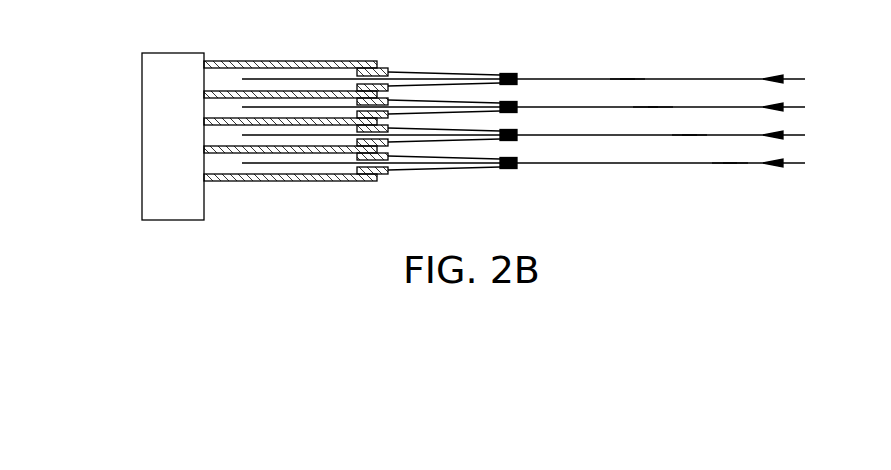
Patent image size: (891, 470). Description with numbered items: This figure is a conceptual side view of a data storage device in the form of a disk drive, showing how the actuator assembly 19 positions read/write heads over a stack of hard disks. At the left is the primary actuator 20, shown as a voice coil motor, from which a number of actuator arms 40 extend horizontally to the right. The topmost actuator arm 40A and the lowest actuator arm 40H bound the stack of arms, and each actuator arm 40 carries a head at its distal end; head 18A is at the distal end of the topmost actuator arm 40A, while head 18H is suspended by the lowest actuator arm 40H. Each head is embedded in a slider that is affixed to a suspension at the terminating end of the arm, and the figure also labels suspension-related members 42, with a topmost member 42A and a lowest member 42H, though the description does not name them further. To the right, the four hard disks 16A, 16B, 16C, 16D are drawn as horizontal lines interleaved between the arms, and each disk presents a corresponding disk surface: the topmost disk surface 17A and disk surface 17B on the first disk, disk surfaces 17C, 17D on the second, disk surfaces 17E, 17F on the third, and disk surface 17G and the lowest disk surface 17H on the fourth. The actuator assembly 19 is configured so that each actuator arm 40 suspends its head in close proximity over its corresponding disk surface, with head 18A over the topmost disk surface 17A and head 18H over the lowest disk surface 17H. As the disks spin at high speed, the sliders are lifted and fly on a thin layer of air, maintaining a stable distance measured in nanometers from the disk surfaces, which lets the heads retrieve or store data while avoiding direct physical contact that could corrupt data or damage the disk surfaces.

The primary actuator 20 is at (142, 136).
The actuator arm 40 is at (290, 125).
The topmost actuator arm 40A is at (288, 61).
The lowest actuator arm 40H is at (237, 182).
The mount plate / base plate 42 is at (450, 131).
The top mount plate 42A is at (450, 69).
The bottom mount plate 42H is at (452, 175).
The actuator assembly 19 is at (424, 119).
The head 18A is at (521, 72).
The head 18H is at (521, 169).
The disk 16A is at (682, 80).
The disk 16B is at (682, 108).
The disk 16C is at (682, 136).
The disk 16D is at (683, 164).
The topmost disk surface 17A is at (630, 79).
The disk surface 17B is at (620, 79).
The disk surface 17C is at (658, 107).
The disk surface 17D is at (643, 107).
The disk surface 17E is at (692, 135).
The disk surface 17F is at (682, 135).
The disk surface 17G is at (722, 163).
The lowest disk surface 17H is at (733, 163).